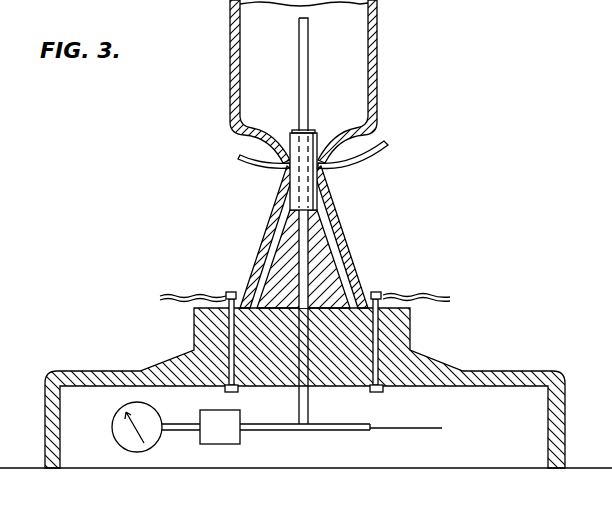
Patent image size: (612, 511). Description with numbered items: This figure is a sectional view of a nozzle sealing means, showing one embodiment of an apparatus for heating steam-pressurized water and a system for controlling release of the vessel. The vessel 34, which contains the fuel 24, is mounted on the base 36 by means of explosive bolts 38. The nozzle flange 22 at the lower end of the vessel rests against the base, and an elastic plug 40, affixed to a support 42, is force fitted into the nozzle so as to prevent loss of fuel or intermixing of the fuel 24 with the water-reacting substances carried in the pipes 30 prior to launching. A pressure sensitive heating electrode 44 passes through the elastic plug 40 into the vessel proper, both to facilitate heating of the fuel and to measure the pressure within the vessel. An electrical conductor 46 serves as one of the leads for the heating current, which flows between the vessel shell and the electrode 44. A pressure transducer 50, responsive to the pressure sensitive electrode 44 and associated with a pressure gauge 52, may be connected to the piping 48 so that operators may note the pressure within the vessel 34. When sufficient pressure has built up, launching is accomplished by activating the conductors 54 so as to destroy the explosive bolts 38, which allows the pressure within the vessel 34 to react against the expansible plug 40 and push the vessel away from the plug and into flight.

The nozzle flange 22 is at (345, 238).
The fuel 24 is at (345, 51).
The pipes 30 is at (268, 168).
The vessel 34 is at (378, 122).
The base 36 is at (512, 372).
The explosive bolts 38 is at (227, 291).
The elastic plug 40 is at (320, 200).
The support 42 is at (340, 292).
The pressure sensitive heating electrode 44 is at (305, 85).
The electrical conductor 46 is at (404, 431).
The piping 48 is at (307, 407).
The pressure transducer 50 is at (240, 446).
The pressure gauge 52 is at (112, 422).
The conductors 54 is at (152, 302).